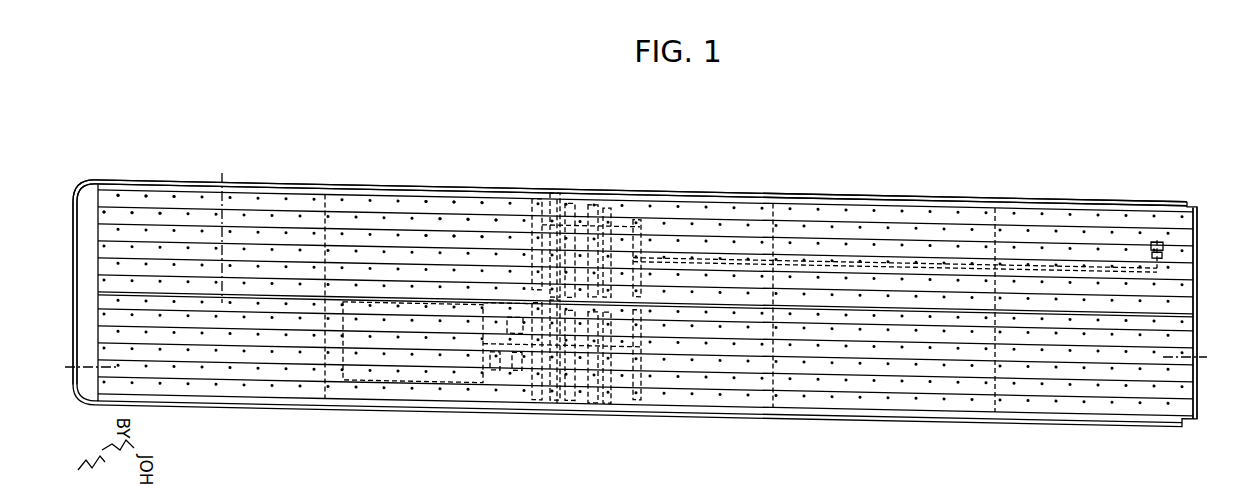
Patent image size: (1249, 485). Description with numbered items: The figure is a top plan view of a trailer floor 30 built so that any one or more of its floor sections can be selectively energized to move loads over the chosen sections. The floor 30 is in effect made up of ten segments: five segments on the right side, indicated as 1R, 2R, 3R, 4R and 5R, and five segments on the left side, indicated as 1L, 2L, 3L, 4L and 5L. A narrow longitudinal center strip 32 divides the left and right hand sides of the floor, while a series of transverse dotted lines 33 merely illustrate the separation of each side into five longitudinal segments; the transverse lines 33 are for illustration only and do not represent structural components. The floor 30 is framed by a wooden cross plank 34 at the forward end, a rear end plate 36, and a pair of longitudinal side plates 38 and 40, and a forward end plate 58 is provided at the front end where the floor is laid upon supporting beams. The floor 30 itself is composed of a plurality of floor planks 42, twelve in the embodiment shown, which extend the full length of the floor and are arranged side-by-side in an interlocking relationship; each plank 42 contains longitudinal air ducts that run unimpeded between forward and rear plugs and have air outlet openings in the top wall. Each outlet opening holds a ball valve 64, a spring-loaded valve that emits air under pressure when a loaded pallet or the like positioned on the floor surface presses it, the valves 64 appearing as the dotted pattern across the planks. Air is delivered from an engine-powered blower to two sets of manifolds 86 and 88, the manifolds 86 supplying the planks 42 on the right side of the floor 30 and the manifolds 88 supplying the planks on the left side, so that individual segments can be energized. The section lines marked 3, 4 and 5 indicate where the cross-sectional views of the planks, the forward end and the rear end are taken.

The trailer floor 30 is at (735, 195).
The longitudinal center strip 32 is at (1197, 308).
The transverse dotted lines 33 is at (332, 193).
The wooden cross plank 34 is at (90, 196).
The rear end plate 36 is at (1198, 258).
The longitudinal side plate 38 is at (622, 192).
The longitudinal side plate 40 is at (632, 415).
The floor planks 42 is at (478, 237).
The forward end plate 58 is at (77, 236).
The ball valve 64 is at (174, 196).
The manifolds 86 is at (541, 197).
The manifolds 88 is at (534, 398).
The floor segment 1R is at (242, 232).
The floor segment 2R is at (406, 243).
The floor segment 3R is at (675, 238).
The floor segment 4R is at (876, 248).
The floor segment 5R is at (1080, 237).
The floor segment 1L is at (240, 358).
The floor segment 2L is at (373, 352).
The floor segment 3L is at (705, 352).
The floor segment 4L is at (888, 365).
The floor segment 5L is at (1097, 365).
The section line 3- 3 is at (209, 173).
The section line 4- 4 is at (65, 354).
The section line 5- 5 is at (1163, 341).